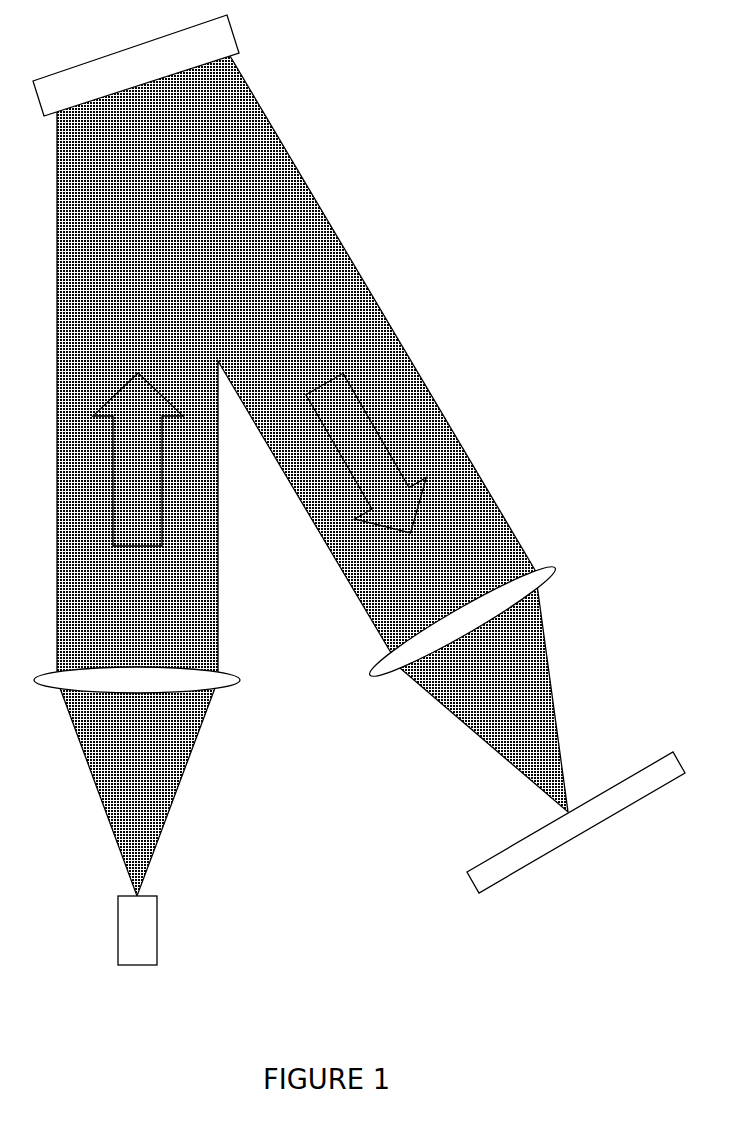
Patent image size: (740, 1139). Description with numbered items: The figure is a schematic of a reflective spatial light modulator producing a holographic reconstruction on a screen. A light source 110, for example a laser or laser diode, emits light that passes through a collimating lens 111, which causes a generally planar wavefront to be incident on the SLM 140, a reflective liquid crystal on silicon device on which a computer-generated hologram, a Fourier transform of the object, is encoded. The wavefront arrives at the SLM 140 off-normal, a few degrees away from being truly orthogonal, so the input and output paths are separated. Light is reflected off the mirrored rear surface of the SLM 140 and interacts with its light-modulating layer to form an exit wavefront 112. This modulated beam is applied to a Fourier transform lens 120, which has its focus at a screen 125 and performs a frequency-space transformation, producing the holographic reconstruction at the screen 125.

The light source 110 is at (158, 932).
The collimating lens 111 is at (238, 686).
The exit wavefront 112 is at (372, 452).
The Fourier transform lens 120 is at (540, 567).
The screen 125 is at (523, 867).
The SLM 140 is at (240, 42).